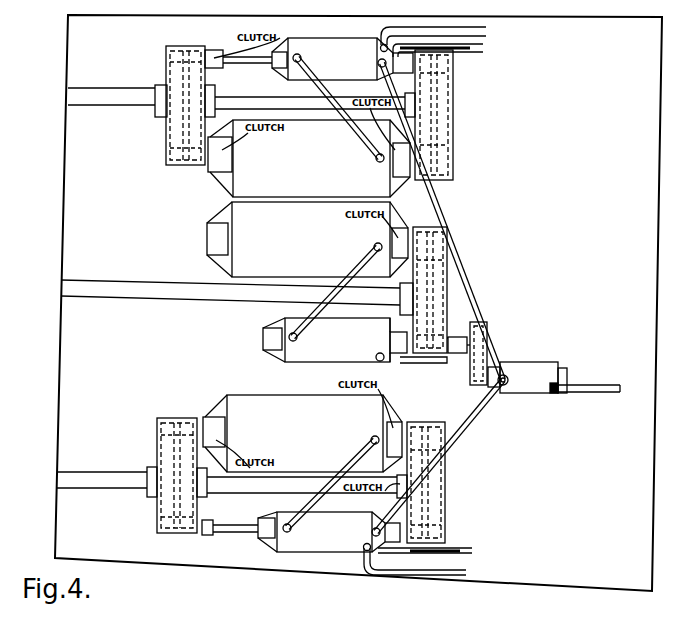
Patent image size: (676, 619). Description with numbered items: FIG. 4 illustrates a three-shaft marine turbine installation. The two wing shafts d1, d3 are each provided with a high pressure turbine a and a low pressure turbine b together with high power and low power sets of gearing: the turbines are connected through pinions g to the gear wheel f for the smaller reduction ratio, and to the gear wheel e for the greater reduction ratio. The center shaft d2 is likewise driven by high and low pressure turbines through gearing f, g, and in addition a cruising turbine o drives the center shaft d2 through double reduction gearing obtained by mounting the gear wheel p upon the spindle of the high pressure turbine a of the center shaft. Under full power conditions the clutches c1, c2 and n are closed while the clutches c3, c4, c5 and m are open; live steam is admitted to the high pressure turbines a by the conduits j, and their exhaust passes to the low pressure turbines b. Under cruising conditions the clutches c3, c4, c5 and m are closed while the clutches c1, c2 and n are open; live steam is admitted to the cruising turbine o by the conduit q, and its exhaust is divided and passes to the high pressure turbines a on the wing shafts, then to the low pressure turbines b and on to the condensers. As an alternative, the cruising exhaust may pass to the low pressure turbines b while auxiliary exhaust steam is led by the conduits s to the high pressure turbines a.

The wing shaft d1 is at (104, 97).
The center shaft d2 is at (107, 286).
The wing shaft d3 is at (79, 480).
The gear wheel e is at (180, 122).
The clutch m is at (240, 108).
The clutch c3 is at (216, 52).
The clutch c4 is at (214, 163).
The high pressure turbine a is at (325, 295).
The low pressure turbine b is at (307, 296).
The clutch c1 is at (400, 72).
The clutch c2 is at (402, 178).
The clutch n is at (378, 500).
The gear wheel f is at (444, 145).
The conduit j is at (490, 32).
The conduit s is at (478, 50).
The pinion g is at (445, 252).
The clutch c5 is at (460, 354).
The gear wheel p is at (474, 384).
The cruising turbine o is at (527, 377).
The conduit q is at (610, 393).